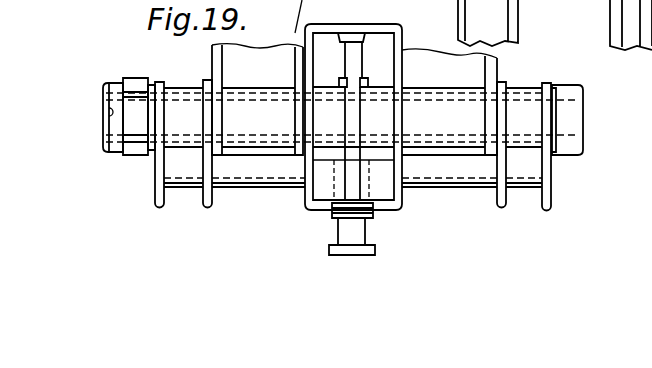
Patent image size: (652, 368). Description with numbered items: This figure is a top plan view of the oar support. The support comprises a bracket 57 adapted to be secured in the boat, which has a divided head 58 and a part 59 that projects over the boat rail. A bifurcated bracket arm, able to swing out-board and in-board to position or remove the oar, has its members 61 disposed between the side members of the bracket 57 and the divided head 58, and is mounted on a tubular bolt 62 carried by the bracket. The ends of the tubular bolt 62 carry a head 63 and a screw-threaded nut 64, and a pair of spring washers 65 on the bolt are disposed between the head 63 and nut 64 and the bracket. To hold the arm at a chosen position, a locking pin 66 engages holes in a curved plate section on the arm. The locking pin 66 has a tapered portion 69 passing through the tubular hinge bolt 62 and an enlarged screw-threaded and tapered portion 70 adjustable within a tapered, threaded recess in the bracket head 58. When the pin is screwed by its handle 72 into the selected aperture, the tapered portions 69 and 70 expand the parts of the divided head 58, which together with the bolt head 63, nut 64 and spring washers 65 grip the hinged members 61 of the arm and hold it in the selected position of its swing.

The bracket 57 is at (186, 187).
The divided head 58 is at (327, 169).
The part 59 is at (400, 33).
The members 61 is at (261, 127).
The tubular bolt 62 is at (104, 108).
The head 63 is at (567, 117).
The screw-threaded nut 64 is at (133, 80).
The spring washers 65 is at (151, 157).
The locking pin 66 is at (353, 55).
The tapered portion 69 is at (357, 125).
The enlarged screw threaded and tapered portion 70 is at (373, 211).
The handle 72 is at (330, 248).